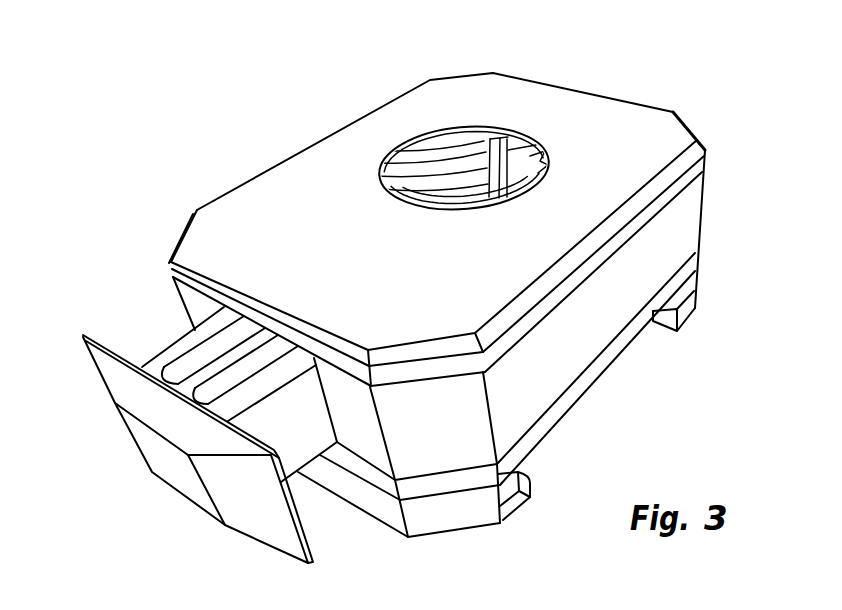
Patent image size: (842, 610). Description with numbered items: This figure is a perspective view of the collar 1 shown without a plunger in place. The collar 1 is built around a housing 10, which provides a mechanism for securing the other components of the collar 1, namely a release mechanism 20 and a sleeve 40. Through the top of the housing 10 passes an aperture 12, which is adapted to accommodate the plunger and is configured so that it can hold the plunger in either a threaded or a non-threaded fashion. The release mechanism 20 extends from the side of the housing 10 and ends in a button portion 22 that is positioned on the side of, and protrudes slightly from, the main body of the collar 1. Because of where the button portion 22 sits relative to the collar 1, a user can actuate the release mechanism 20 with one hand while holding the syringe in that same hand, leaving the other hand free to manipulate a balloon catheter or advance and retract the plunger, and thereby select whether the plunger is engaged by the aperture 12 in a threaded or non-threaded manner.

The collar 1 is at (639, 91).
The housing 10 is at (474, 303).
The aperture 12 is at (411, 137).
The release mechanism 20 is at (172, 421).
The button portion 22 is at (188, 479).
The sleeve 40 is at (692, 327).